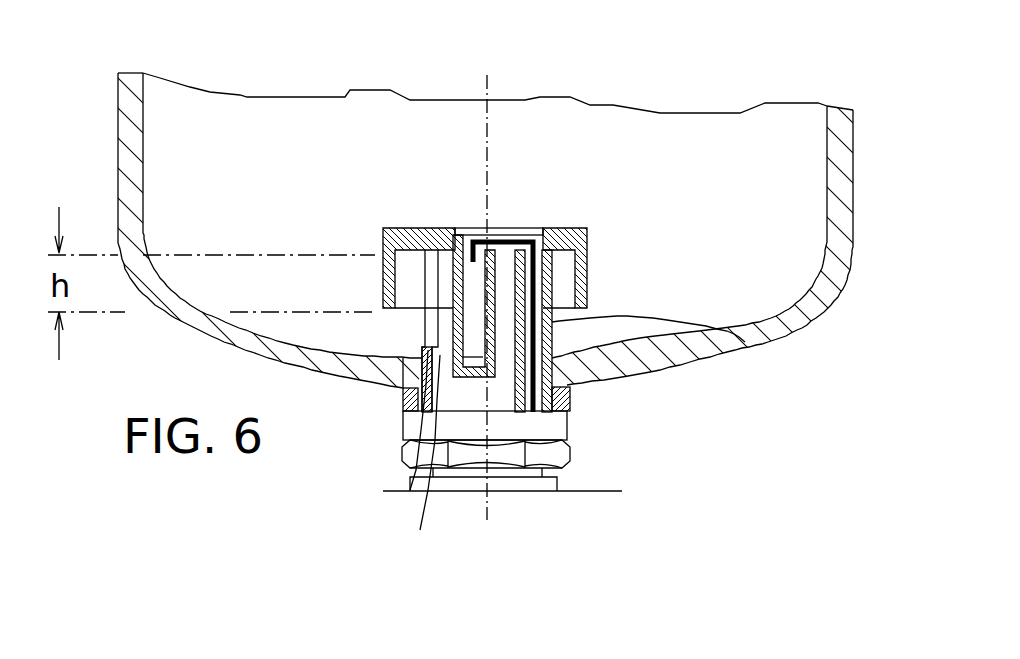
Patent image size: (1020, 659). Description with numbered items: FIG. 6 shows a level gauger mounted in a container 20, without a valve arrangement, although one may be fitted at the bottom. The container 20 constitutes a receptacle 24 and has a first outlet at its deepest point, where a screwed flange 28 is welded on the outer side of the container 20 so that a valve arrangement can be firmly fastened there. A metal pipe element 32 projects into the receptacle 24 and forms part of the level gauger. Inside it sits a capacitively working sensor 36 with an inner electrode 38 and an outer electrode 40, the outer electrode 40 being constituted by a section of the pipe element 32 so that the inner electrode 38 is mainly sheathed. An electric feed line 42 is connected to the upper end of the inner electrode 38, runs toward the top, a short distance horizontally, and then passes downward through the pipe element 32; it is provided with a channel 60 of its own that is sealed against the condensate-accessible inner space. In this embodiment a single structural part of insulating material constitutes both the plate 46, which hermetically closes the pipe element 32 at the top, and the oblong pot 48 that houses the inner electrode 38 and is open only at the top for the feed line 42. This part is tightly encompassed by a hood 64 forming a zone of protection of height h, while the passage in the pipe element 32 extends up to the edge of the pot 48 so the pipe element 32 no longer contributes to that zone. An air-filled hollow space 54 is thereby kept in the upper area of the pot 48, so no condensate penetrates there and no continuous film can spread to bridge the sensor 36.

The container 20 is at (130, 78).
The receptacle 24 is at (238, 115).
The hood 64 is at (412, 228).
The pot 48 is at (470, 228).
The plate 46 is at (505, 228).
The hollow space 54 is at (563, 225).
The sensor 36 is at (745, 342).
The channel 60 is at (552, 333).
The screwed flange 28 is at (560, 426).
The pipe element 32 is at (410, 490).
The inner electrode 38 is at (472, 300).
The electric feed line 42 is at (530, 482).
The outer electrode 40 is at (420, 530).